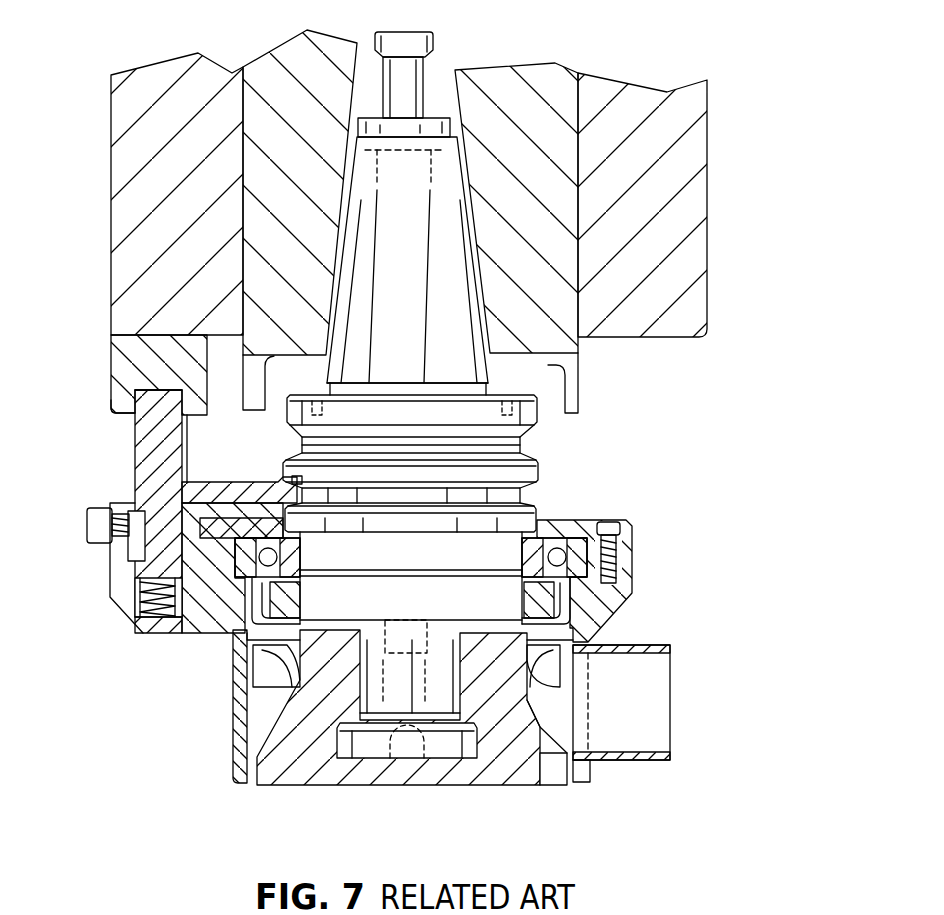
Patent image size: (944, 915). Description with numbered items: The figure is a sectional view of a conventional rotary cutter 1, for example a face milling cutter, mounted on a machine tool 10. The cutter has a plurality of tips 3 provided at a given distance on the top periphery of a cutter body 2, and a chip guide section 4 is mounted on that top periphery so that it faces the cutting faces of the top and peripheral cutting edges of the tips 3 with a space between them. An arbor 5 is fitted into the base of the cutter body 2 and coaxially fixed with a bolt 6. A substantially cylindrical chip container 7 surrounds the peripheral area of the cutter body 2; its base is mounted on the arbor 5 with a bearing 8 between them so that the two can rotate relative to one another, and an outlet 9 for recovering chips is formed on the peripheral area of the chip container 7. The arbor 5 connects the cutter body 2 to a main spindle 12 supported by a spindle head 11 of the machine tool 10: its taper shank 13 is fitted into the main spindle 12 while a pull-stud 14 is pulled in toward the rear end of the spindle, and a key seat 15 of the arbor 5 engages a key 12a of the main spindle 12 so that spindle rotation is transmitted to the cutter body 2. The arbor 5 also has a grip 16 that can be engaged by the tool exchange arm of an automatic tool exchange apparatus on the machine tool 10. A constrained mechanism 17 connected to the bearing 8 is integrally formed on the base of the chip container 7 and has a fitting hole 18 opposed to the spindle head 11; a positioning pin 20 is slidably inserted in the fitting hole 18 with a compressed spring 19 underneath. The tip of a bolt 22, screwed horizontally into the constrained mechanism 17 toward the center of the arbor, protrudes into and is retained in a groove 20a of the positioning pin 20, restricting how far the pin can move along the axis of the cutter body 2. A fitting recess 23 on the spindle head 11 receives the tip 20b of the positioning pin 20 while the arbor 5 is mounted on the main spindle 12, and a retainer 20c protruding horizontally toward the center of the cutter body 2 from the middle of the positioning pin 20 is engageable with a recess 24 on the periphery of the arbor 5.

The rotary cutter 1 is at (497, 269).
The cutter body 2 is at (298, 762).
The tips 3 is at (557, 764).
The chip guide section 4 is at (553, 787).
The arbor 5 is at (468, 434).
The bolt 6 is at (450, 754).
The chip container 7 is at (240, 733).
The bearing 8 is at (223, 628).
The outlet 9 is at (645, 645).
The machine tool 10 is at (720, 168).
The spindle head 11 is at (136, 275).
The main spindle 12 is at (565, 345).
The key 12a is at (266, 402).
The taper shank 13 is at (389, 284).
The pull-stud 14 is at (437, 44).
The key seat 15 is at (545, 410).
The grip 16 is at (445, 440).
The constrained mechanism 17 is at (186, 637).
The fitting hole 18 is at (140, 590).
The compressed spring 19 is at (148, 633).
The positioning pin 20 is at (148, 452).
The groove 20a is at (130, 548).
The tip 20b is at (155, 386).
The retainer 20c is at (218, 493).
The bolt 22 is at (96, 545).
The fitting recess 23 is at (128, 411).
The recess 24 is at (292, 478).